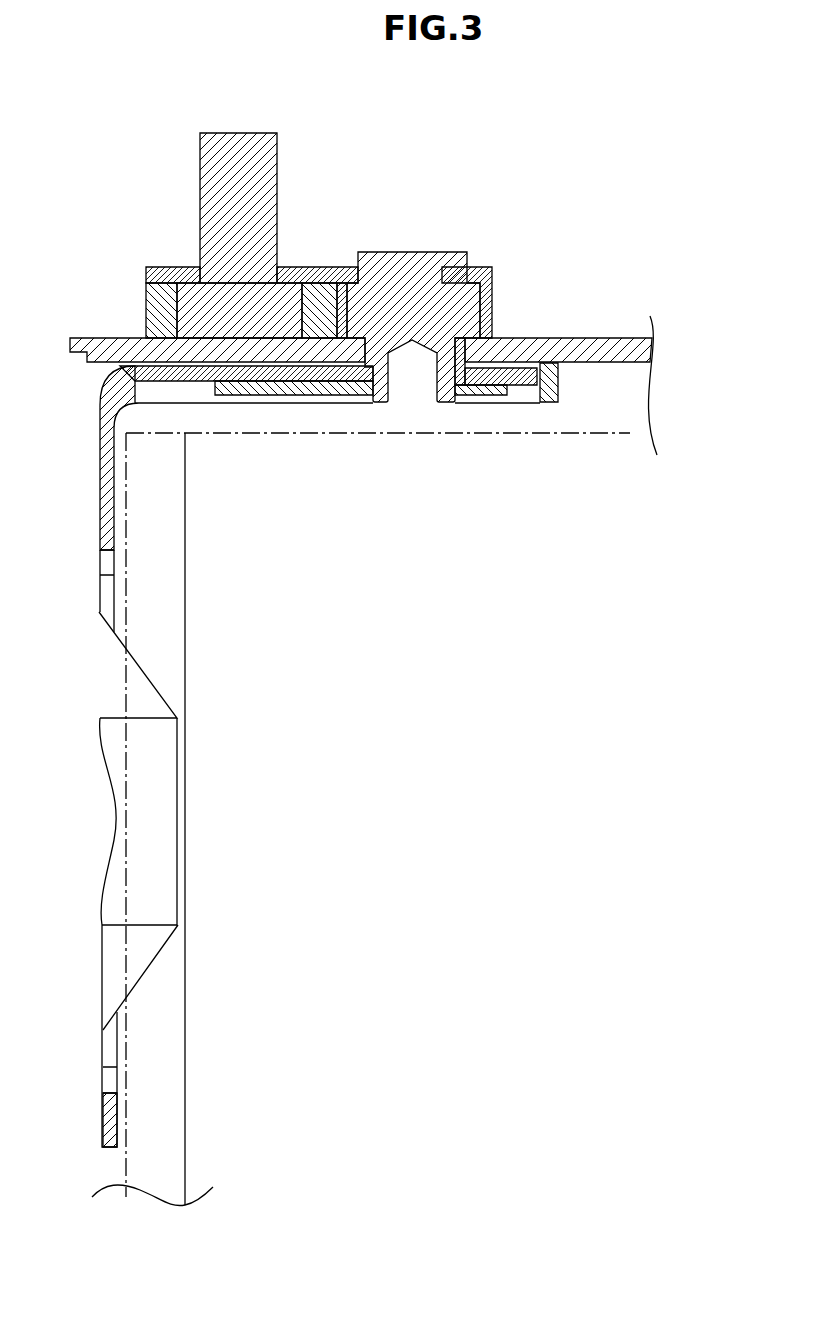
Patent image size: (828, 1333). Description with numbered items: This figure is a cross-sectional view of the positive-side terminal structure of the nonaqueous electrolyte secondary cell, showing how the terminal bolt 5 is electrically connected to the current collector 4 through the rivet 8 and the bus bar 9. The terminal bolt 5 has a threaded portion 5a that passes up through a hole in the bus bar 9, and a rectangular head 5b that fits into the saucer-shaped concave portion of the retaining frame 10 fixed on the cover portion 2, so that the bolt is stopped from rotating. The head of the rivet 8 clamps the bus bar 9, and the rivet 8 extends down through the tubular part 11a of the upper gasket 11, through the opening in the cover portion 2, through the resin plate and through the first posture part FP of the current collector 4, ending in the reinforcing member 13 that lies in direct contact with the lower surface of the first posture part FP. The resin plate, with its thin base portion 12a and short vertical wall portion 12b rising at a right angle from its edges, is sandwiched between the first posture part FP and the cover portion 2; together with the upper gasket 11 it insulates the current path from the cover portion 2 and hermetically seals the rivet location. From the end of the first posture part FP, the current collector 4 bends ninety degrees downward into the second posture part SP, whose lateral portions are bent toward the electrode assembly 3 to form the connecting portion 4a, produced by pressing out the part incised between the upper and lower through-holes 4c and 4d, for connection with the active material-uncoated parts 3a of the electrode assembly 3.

The cover portion 2 is at (596, 338).
The electrode assembly 3 is at (361, 786).
The active material-uncoated parts 3a is at (165, 635).
The current collector 4 is at (178, 821).
The connecting portion 4a is at (165, 756).
The upper through-hole 4c is at (114, 568).
The lower through-hole 4d is at (118, 1083).
The terminal bolt 5 is at (225, 235).
The threaded portion 5a is at (277, 200).
The head 5b is at (198, 283).
The rivet 8 is at (405, 252).
The bus bar 9 is at (310, 267).
The retaining frame 10 is at (146, 320).
The upper gasket 11 is at (492, 298).
The tubular part 11a is at (470, 340).
The base portion 12a is at (307, 383).
The vertical wall portion 12b is at (547, 405).
The reinforcing member 13 is at (343, 395).
The first posture part FP is at (183, 394).
The second posture part SP is at (128, 535).